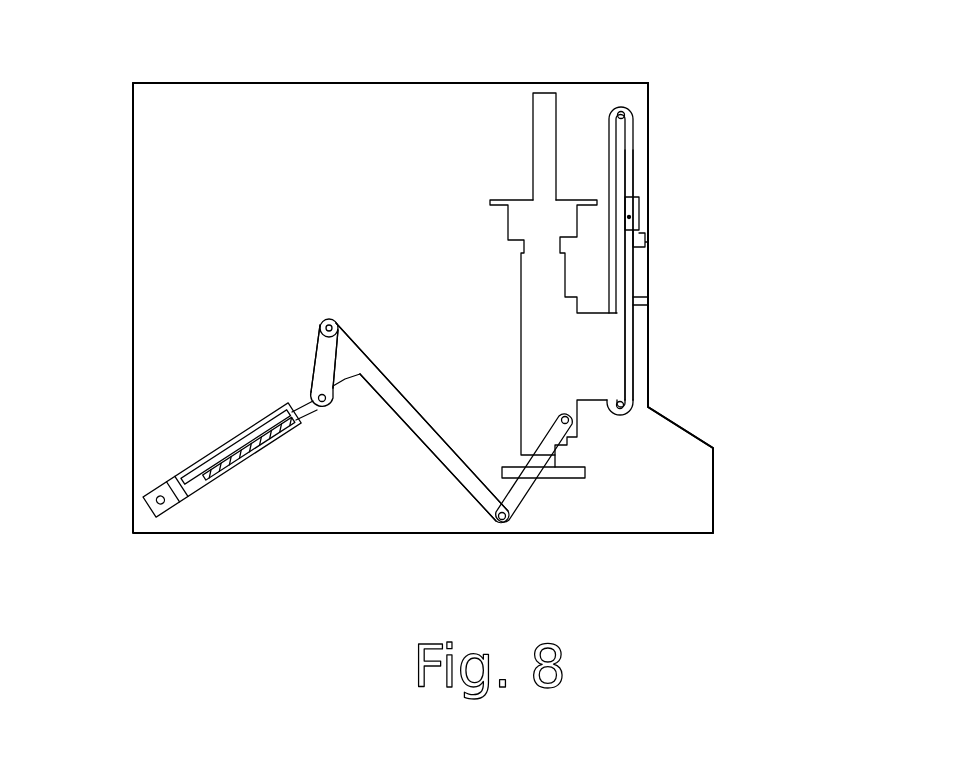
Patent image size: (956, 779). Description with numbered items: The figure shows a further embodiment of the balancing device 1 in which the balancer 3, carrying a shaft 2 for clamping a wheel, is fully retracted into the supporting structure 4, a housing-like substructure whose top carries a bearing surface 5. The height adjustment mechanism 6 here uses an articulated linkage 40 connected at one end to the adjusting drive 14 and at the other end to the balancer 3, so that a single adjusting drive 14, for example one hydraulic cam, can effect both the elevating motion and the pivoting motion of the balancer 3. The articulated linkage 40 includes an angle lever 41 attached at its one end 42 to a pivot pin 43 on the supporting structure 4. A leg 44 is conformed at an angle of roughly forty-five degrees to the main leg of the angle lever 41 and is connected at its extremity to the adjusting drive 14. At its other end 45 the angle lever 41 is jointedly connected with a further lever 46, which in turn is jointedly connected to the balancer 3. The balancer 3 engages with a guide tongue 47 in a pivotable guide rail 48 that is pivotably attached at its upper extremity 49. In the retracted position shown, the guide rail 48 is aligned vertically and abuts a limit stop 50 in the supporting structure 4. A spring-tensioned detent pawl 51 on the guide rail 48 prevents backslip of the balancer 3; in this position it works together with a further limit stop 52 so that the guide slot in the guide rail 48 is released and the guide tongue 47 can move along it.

The balancing device 1 is at (682, 189).
The shaft 2 is at (545, 110).
The balancer 3 is at (576, 278).
The supporting structure 4 is at (133, 247).
The bearing surface 5 is at (250, 83).
The height adjustment mechanism 6 is at (281, 360).
The adjusting drive 14 is at (247, 481).
The articulated linkage 40 is at (403, 443).
The angle lever 41 is at (385, 378).
The end of the angle lever 42 is at (333, 320).
The pivot pin 43 is at (340, 333).
The leg 44 is at (343, 386).
The other end of the angle lever 45 is at (503, 525).
The further lever 46 is at (537, 473).
The guide tongue 47 is at (618, 368).
The guide rail 48 is at (631, 148).
The upper extremity of the guide rail 49 is at (619, 106).
The limit stop 50 is at (633, 298).
The detent pawl 51 is at (641, 200).
The further limit stop 52 is at (645, 241).